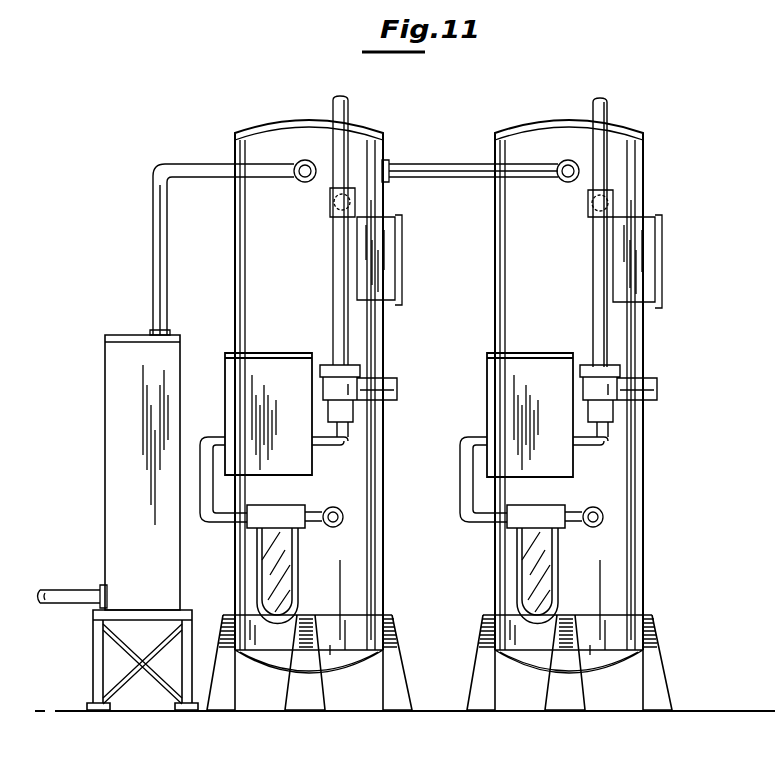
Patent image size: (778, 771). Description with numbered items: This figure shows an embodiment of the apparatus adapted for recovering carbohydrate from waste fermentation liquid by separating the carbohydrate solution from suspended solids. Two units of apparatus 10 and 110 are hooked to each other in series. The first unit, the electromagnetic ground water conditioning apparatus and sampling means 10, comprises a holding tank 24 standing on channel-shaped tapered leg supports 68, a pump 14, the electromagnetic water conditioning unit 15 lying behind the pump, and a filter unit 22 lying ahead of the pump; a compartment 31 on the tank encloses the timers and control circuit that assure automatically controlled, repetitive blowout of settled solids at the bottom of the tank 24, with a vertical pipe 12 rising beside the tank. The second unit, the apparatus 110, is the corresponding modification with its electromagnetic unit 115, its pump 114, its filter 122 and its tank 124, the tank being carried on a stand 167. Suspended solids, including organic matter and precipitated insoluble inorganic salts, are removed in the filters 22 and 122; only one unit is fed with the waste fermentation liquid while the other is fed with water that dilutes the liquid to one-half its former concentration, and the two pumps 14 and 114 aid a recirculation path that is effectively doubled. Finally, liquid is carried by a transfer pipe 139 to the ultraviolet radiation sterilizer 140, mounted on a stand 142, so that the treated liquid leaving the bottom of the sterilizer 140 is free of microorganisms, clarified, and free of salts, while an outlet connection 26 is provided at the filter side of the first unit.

The apparatus 110 is at (258, 120).
The electromagnetic ground water conditioning apparatus and sampling means 10 is at (495, 125).
The vertical pipe 12 is at (608, 108).
The compartment 31 is at (665, 235).
The holding tank 24 is at (546, 245).
The transfer pipe 139 is at (152, 242).
The ultraviolet radiation sterilizer 140 is at (128, 405).
The stand 142 is at (95, 648).
The electromagnetic unit 115 is at (268, 380).
The electromagnetic water conditioning unit 15 is at (535, 380).
The pump 114 is at (360, 402).
The pump 14 is at (615, 400).
The tank 124 is at (368, 480).
The filter 122 is at (290, 552).
The filter unit 22 is at (543, 555).
The outlet connection 26 is at (597, 532).
The stand 167 is at (362, 613).
The channel-shaped tapered leg supports 68 is at (660, 648).